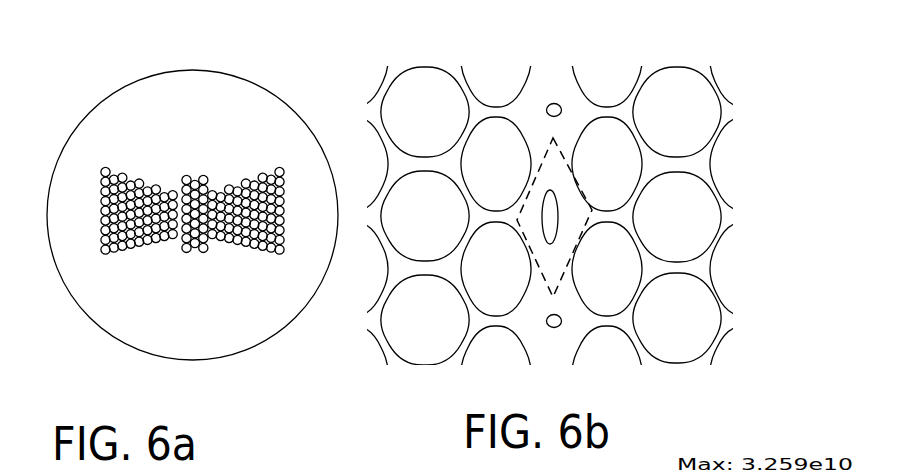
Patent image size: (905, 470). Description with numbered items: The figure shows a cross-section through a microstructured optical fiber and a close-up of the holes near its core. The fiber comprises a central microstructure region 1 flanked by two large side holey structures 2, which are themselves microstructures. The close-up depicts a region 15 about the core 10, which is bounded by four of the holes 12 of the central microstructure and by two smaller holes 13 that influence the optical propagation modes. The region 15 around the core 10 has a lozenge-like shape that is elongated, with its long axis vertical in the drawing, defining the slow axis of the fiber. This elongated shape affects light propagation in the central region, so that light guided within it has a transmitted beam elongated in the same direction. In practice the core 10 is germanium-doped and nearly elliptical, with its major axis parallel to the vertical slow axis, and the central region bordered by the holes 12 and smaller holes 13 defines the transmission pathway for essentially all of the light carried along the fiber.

In FIG. 6A, the central microstructure region 1 is at (193, 175).
In FIG. 6A, the large side holey structures 2 is at (122, 187).
In FIG. 6B, the core 10 is at (557, 212).
In FIG. 6B, the holes 12 is at (495, 163).
In FIG. 6B, the smaller holes 13 is at (557, 100).
In FIG. 6B, the region 15 is at (555, 272).